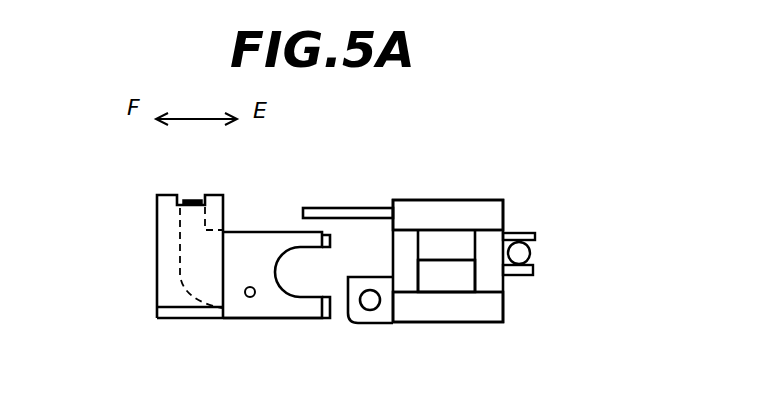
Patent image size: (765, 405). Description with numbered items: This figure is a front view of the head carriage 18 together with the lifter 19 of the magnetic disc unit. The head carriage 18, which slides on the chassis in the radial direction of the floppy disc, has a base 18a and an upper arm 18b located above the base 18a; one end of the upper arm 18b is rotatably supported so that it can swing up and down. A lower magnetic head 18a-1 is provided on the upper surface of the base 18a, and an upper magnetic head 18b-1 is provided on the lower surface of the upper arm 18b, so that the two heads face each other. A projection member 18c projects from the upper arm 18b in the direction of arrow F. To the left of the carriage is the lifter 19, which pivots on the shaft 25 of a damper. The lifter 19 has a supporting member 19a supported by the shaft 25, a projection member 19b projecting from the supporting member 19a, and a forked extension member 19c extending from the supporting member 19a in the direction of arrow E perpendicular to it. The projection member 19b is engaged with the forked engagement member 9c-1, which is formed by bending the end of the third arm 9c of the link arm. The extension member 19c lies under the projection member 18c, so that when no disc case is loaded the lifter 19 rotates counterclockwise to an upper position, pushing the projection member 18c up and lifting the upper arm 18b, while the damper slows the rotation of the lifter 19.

The engagement member 9c-1 is at (168, 210).
The third arm 9c is at (180, 317).
The projection member 19b is at (193, 197).
The supporting member 19a is at (240, 242).
The lifter 19 is at (282, 310).
The extension member 19c is at (330, 238).
The shaft 25 is at (249, 298).
The projection member 18c is at (350, 213).
The head carriage 18 is at (472, 197).
The upper arm 18b is at (500, 215).
The upper magnetic head 18b-1 is at (465, 243).
The lower magnetic head 18a-1 is at (465, 284).
The base 18a is at (485, 315).